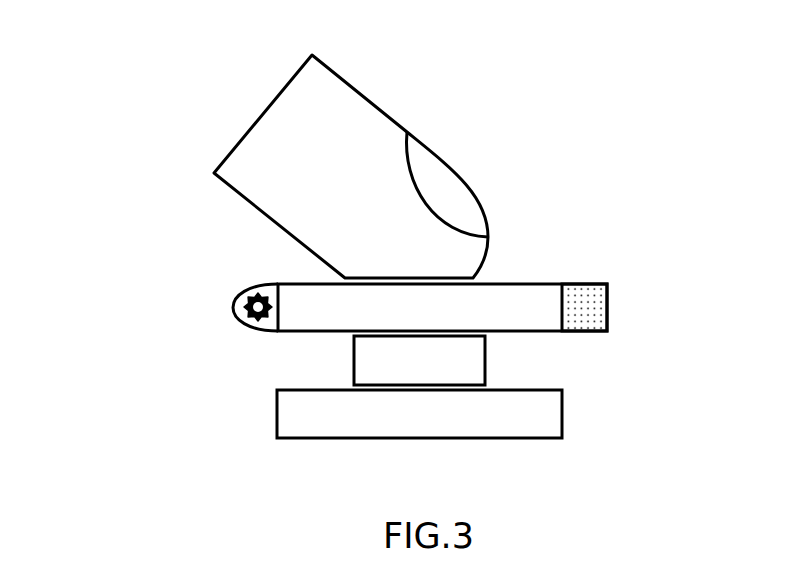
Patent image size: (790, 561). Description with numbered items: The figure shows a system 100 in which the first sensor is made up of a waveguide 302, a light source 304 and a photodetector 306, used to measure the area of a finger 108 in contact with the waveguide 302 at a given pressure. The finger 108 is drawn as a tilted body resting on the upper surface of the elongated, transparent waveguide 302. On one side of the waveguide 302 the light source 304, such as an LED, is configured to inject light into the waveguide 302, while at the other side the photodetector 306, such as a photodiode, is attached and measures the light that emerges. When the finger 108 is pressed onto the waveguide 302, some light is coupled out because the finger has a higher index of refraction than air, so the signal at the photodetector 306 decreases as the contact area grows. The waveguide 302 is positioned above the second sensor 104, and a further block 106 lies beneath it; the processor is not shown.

The system 100 is at (112, 353).
The second sensor 104 is at (485, 360).
The base 106 is at (562, 417).
The finger 108 is at (362, 92).
The waveguide 302 is at (525, 285).
The light source 304 is at (232, 307).
The photodetector 306 is at (608, 300).